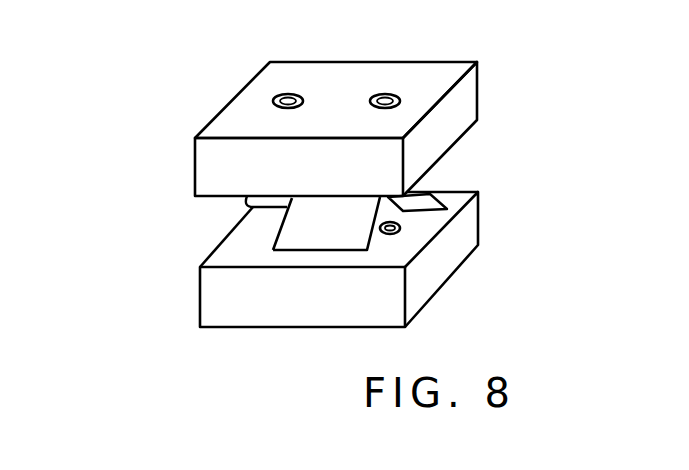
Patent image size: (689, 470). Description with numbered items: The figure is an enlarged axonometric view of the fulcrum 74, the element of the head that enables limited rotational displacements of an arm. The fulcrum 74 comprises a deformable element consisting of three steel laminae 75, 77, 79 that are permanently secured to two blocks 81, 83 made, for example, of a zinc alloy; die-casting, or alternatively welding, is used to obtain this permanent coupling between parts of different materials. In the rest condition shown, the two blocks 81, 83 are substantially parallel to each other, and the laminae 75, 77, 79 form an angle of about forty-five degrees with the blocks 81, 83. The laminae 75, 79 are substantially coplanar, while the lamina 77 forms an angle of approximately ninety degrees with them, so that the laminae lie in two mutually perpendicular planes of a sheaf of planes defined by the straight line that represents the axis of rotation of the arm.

The fulcrum 74 is at (499, 89).
The steel lamina 75 is at (264, 200).
The steel lamina 77 is at (352, 223).
The steel lamina 79 is at (420, 188).
The block 81 is at (453, 117).
The block 83 is at (223, 285).